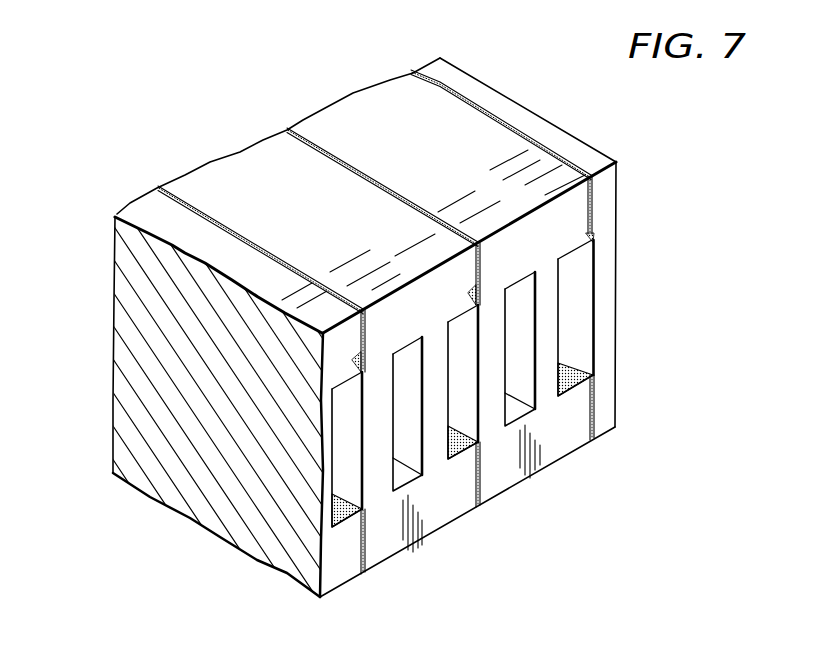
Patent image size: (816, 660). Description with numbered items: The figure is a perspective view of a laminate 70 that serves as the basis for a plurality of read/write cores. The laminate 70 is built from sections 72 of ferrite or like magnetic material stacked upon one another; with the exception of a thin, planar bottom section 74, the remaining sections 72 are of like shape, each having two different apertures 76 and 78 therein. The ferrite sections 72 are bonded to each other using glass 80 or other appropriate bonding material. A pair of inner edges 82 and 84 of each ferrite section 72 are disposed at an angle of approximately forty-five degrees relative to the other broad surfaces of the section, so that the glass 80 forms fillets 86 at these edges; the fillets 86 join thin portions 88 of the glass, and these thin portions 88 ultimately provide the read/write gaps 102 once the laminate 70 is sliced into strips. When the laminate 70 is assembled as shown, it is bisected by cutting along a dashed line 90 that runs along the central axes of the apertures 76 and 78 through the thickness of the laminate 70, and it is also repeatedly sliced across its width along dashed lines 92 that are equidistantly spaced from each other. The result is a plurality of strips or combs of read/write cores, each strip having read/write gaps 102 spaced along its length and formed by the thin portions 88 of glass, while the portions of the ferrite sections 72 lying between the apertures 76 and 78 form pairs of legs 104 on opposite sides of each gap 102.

The laminate 70 is at (138, 292).
The sections 72 is at (408, 298).
The bottom section 74 is at (607, 233).
The aperture 76 is at (583, 332).
The aperture 78 is at (523, 365).
The glass 80 is at (593, 258).
The inner edge 82 is at (600, 186).
The inner edge 84 is at (593, 382).
The fillets 86 is at (587, 238).
The thin portions 88 is at (593, 437).
The dashed line 90 is at (283, 493).
The dashed lines 92 is at (550, 182).
The read/write gaps 102 is at (460, 97).
The legs 104 is at (437, 375).